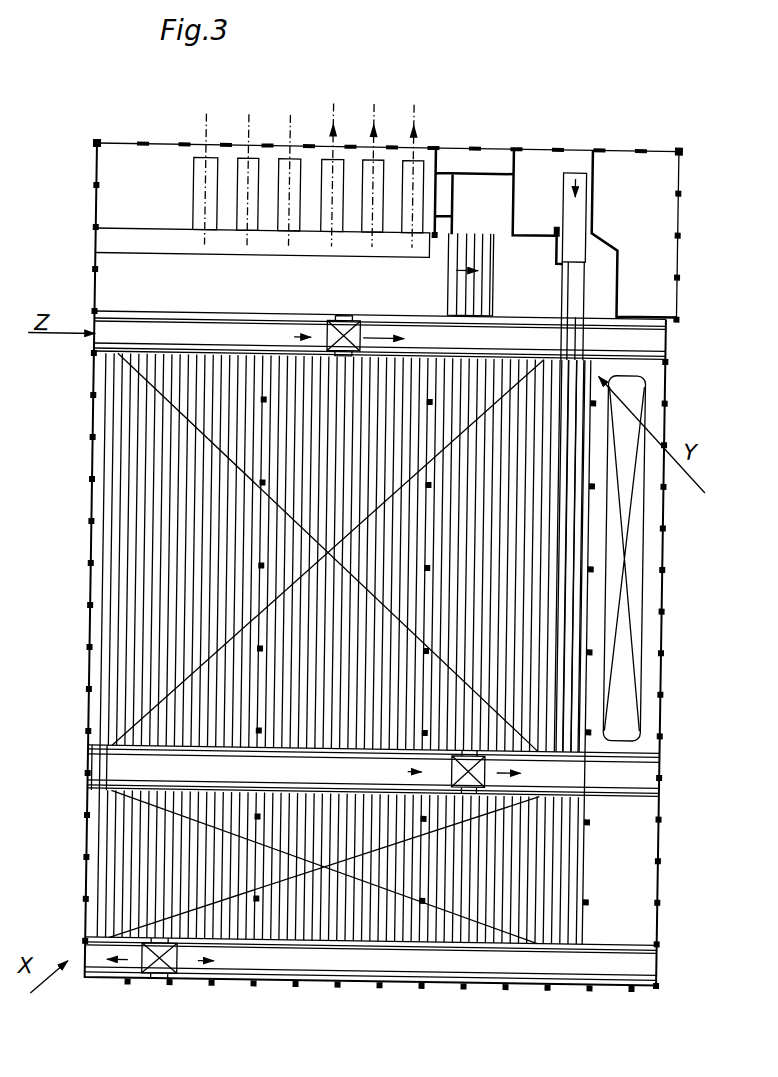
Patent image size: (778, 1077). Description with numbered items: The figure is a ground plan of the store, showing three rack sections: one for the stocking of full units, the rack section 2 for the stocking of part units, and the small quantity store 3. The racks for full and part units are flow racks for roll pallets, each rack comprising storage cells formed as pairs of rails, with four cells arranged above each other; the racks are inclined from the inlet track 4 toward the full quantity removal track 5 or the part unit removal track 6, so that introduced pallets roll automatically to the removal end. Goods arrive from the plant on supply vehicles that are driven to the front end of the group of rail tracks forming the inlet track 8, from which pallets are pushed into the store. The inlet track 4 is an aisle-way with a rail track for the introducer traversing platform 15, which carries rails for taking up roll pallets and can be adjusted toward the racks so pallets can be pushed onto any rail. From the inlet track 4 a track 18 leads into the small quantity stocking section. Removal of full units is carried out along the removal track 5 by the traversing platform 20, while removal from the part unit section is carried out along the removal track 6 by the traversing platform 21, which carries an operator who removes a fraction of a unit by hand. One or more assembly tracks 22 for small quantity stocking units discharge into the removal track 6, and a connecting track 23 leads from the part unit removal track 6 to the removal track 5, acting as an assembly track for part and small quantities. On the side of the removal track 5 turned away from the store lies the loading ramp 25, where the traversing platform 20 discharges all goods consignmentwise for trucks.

The rack section for part units 2 is at (337, 867).
The small quantity store 3 is at (624, 559).
The inlet track 4 is at (373, 771).
The full quantity removal track 5 is at (380, 335).
The part unit removal track 6 is at (371, 958).
The inlet track 8 is at (586, 508).
The introducer traversing platform 15 is at (458, 752).
The track into small quantity section 18 is at (607, 775).
The full unit removal traversing platform 20 is at (345, 312).
The part unit removal traversing platform 21 is at (185, 976).
The assembly track 22 is at (569, 871).
The connecting track 23 is at (113, 668).
The loading ramp 25 is at (263, 196).